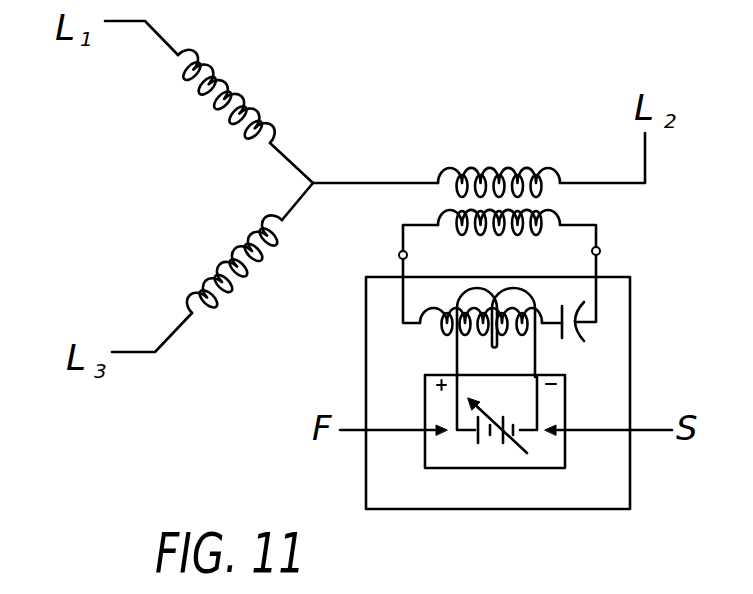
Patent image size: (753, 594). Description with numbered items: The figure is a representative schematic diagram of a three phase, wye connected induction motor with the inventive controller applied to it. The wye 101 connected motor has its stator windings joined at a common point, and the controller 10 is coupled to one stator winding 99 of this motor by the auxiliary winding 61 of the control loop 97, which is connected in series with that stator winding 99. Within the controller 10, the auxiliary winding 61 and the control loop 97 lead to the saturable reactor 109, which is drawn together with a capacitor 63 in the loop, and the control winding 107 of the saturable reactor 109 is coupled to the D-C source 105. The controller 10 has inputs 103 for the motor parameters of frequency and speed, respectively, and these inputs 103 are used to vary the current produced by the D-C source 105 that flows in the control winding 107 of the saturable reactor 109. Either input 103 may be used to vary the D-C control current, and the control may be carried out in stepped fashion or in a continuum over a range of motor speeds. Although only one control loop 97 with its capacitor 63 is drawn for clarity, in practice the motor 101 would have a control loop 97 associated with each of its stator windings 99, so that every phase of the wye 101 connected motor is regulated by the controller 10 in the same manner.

The stator winding 99 is at (252, 107).
The wye connected motor 101 is at (200, 199).
The controller 10 is at (322, 294).
The auxiliary winding 61 is at (557, 213).
The control loop 97 is at (598, 264).
The capacitor 63 is at (576, 330).
The saturable reactor 109 is at (442, 327).
The control winding 107 is at (540, 356).
The D-C source 105 is at (522, 469).
The inputs 103 is at (359, 434).